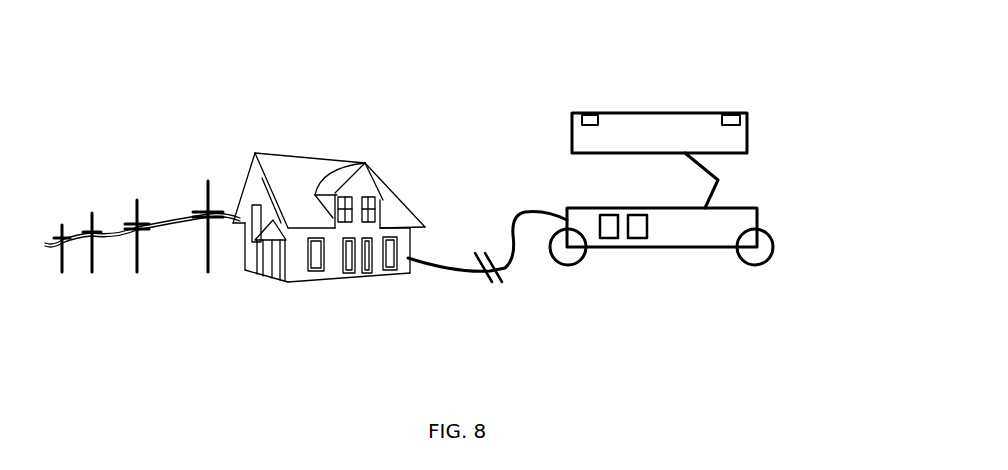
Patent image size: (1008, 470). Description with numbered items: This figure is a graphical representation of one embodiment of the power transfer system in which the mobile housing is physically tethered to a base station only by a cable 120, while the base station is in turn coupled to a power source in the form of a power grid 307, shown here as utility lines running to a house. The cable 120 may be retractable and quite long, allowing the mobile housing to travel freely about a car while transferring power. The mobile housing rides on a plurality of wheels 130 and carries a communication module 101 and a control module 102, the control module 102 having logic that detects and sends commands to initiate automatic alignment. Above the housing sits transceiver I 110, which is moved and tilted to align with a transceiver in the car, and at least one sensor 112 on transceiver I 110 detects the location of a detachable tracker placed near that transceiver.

The power grid 307 is at (137, 224).
The cable 120 is at (507, 227).
The transceiver I 110 is at (750, 142).
The sensor 112 is at (583, 114).
The communication module 101 is at (611, 236).
The control module 102 is at (647, 236).
The wheels 130 is at (767, 263).